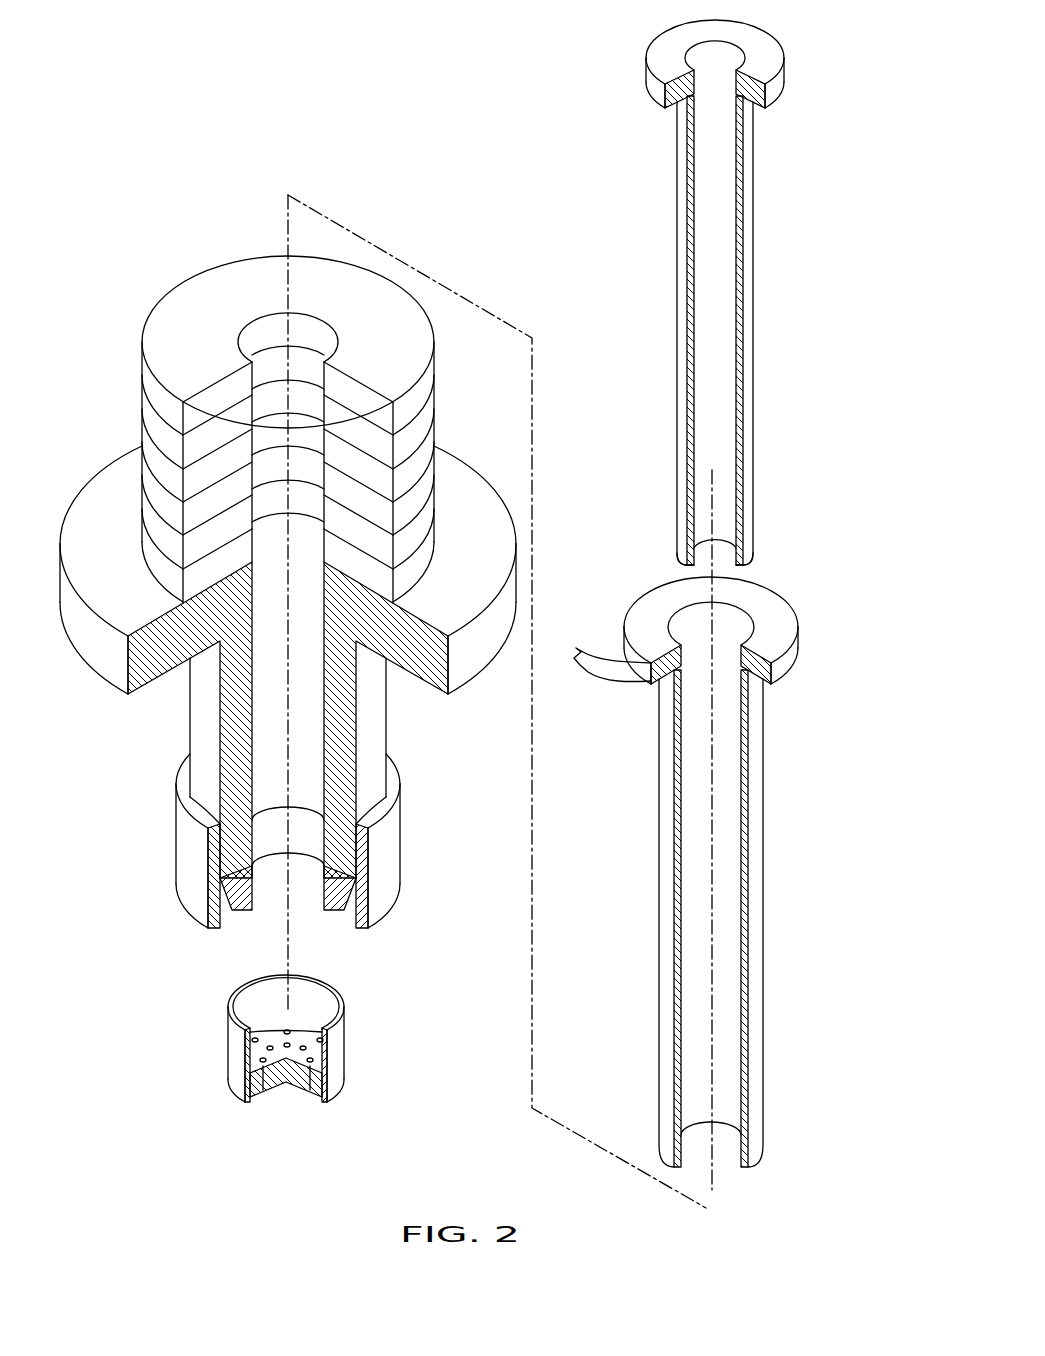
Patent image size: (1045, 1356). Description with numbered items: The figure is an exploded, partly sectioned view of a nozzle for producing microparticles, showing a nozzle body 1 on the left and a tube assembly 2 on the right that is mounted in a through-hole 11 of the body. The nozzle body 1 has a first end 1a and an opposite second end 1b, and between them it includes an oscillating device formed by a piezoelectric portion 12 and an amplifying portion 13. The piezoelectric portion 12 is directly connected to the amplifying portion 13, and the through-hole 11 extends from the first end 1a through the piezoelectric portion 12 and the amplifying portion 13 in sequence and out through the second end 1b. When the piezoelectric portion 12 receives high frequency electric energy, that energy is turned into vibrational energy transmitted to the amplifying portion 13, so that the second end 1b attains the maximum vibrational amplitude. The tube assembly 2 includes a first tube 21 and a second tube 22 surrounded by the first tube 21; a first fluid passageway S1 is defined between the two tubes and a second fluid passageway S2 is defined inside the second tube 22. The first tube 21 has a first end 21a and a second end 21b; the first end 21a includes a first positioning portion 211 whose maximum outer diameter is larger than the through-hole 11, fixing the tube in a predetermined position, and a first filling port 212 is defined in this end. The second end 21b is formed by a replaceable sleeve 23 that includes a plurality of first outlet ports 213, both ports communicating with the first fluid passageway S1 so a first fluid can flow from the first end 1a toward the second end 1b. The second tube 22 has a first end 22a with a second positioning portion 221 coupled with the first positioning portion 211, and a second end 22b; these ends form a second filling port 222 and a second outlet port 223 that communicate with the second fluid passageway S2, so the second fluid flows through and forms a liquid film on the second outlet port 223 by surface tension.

The nozzle body 1 is at (110, 388).
The first end 1a is at (222, 280).
The second end 1b is at (221, 932).
The through-hole 11 is at (268, 676).
The piezoelectric portion 12 is at (405, 421).
The amplifying portion 13 is at (378, 710).
The tube assembly 2 is at (760, 267).
The first tube 21 is at (755, 925).
The first end 21a is at (778, 633).
The second end 21b is at (262, 1097).
The first positioning portion 211 is at (785, 664).
The first filling port 212 is at (600, 681).
The first outlet ports 213 is at (299, 1090).
The second tube 22 is at (747, 357).
The first end 22a is at (667, 57).
The second end 22b is at (682, 567).
The second positioning portion 221 is at (661, 90).
The second filling port 222 is at (733, 63).
The second outlet port 223 is at (722, 552).
The sleeve 23 is at (337, 1050).
The first fluid passageway S1 is at (715, 855).
The second fluid passageway S2 is at (720, 303).